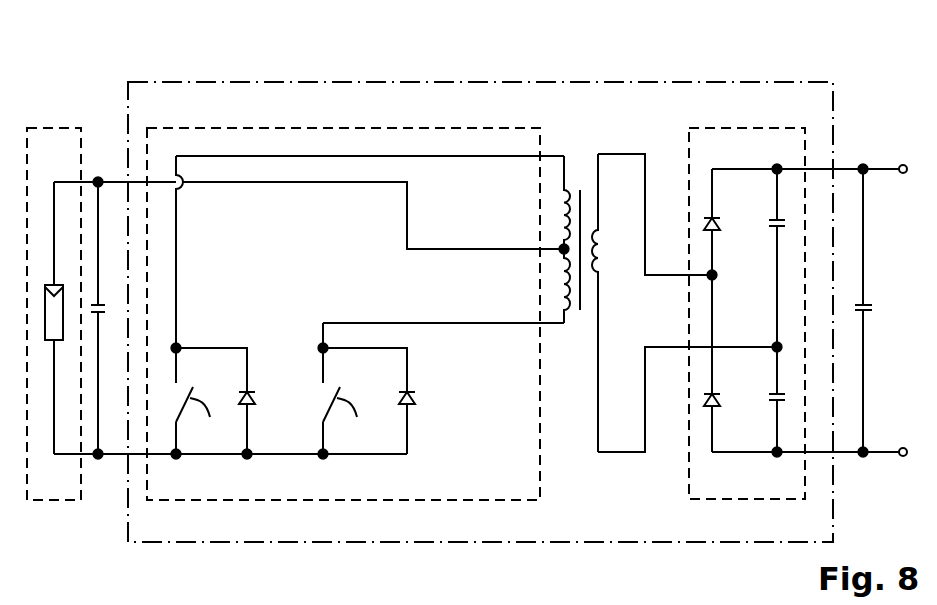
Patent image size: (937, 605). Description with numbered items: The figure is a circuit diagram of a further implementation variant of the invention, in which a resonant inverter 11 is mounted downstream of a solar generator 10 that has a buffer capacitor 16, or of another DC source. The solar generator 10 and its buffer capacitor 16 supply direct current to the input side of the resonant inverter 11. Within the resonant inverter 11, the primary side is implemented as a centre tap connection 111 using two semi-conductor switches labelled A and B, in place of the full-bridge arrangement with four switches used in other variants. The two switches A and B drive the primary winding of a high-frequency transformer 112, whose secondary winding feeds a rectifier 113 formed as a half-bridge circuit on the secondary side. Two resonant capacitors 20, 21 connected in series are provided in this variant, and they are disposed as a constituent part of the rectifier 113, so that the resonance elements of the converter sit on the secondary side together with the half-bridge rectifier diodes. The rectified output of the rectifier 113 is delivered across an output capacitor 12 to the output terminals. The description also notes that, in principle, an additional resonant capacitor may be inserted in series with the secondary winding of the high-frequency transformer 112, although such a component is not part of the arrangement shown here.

The solar generator 10 is at (52, 128).
The buffer capacitor 16 is at (105, 272).
The resonant inverter 11 is at (373, 82).
The primary side centre tap connection 111 is at (240, 128).
The high-frequency transformer 112 is at (580, 170).
The rectifier 113 is at (730, 128).
The resonant capacitor 20 is at (771, 227).
The resonant capacitor 21 is at (770, 394).
The output capacitor / load 12 is at (874, 283).